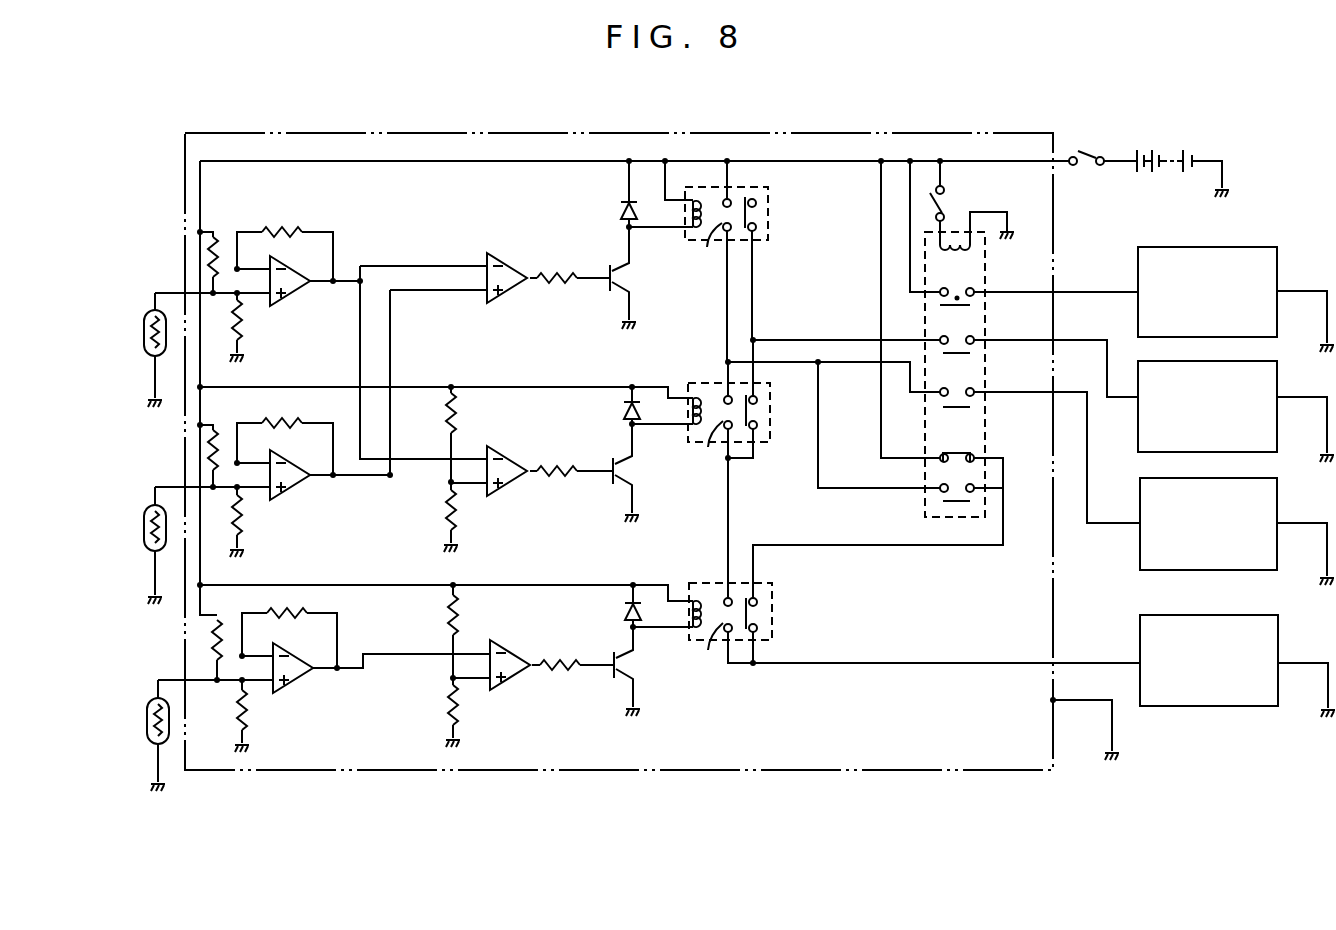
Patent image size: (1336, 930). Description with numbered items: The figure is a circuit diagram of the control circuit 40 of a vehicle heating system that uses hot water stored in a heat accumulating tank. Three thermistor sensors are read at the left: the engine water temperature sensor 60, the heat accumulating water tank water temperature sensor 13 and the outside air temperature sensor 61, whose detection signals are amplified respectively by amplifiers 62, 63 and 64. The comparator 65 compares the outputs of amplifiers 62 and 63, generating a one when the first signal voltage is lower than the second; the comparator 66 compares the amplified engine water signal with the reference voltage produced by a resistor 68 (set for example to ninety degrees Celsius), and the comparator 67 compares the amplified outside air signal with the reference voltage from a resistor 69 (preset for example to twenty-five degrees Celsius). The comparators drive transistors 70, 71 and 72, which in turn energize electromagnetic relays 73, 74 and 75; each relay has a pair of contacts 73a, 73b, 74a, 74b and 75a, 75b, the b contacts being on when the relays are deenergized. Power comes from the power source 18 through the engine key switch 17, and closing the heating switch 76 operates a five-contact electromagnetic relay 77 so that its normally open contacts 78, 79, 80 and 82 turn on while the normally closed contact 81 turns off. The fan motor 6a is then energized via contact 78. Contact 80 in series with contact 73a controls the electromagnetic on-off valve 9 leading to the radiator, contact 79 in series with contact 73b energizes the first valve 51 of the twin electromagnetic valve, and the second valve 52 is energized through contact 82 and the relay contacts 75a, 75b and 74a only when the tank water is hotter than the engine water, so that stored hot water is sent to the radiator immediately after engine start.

The control circuit 40 is at (205, 133).
The engine water temperature sensor 60 is at (144, 332).
The heat accumulating water tank water temperature sensor 13 is at (144, 528).
The outside air temperature sensor 61 is at (147, 724).
The amplifier 62 is at (290, 293).
The amplifier 63 is at (290, 487).
The amplifier 64 is at (293, 680).
The comparator 65 is at (507, 292).
The comparator 66 is at (507, 487).
The comparator 67 is at (510, 681).
The resistor 68 is at (447, 504).
The resistor 69 is at (447, 699).
The transistor 70 is at (631, 287).
The transistor 71 is at (634, 480).
The transistor 72 is at (635, 674).
The electromagnetic relay 73 is at (768, 190).
The contact 73a is at (708, 261).
The contact 73b is at (757, 214).
The electromagnetic relay 74 is at (712, 383).
The contact 74a is at (705, 480).
The contact 74b is at (758, 412).
The electromagnetic relay 75 is at (716, 583).
The contact 75a is at (707, 635).
The contact 75b is at (758, 614).
The heating switch 76 is at (946, 208).
The 5-contact electromagnetic relay 77 is at (986, 272).
The normally open contact 78 is at (976, 296).
The normally open contact 79 is at (976, 345).
The normally open contact 80 is at (976, 397).
The normally closed contact 81 is at (976, 465).
The normally open contact 82 is at (976, 494).
The engine key switch 17 is at (1090, 150).
The power source 18 is at (1155, 148).
The fan motor 6a is at (1277, 254).
The first valve 51 is at (1277, 374).
The electromagnetic on-off valve 9 is at (1277, 488).
The second valve 52 is at (1278, 630).